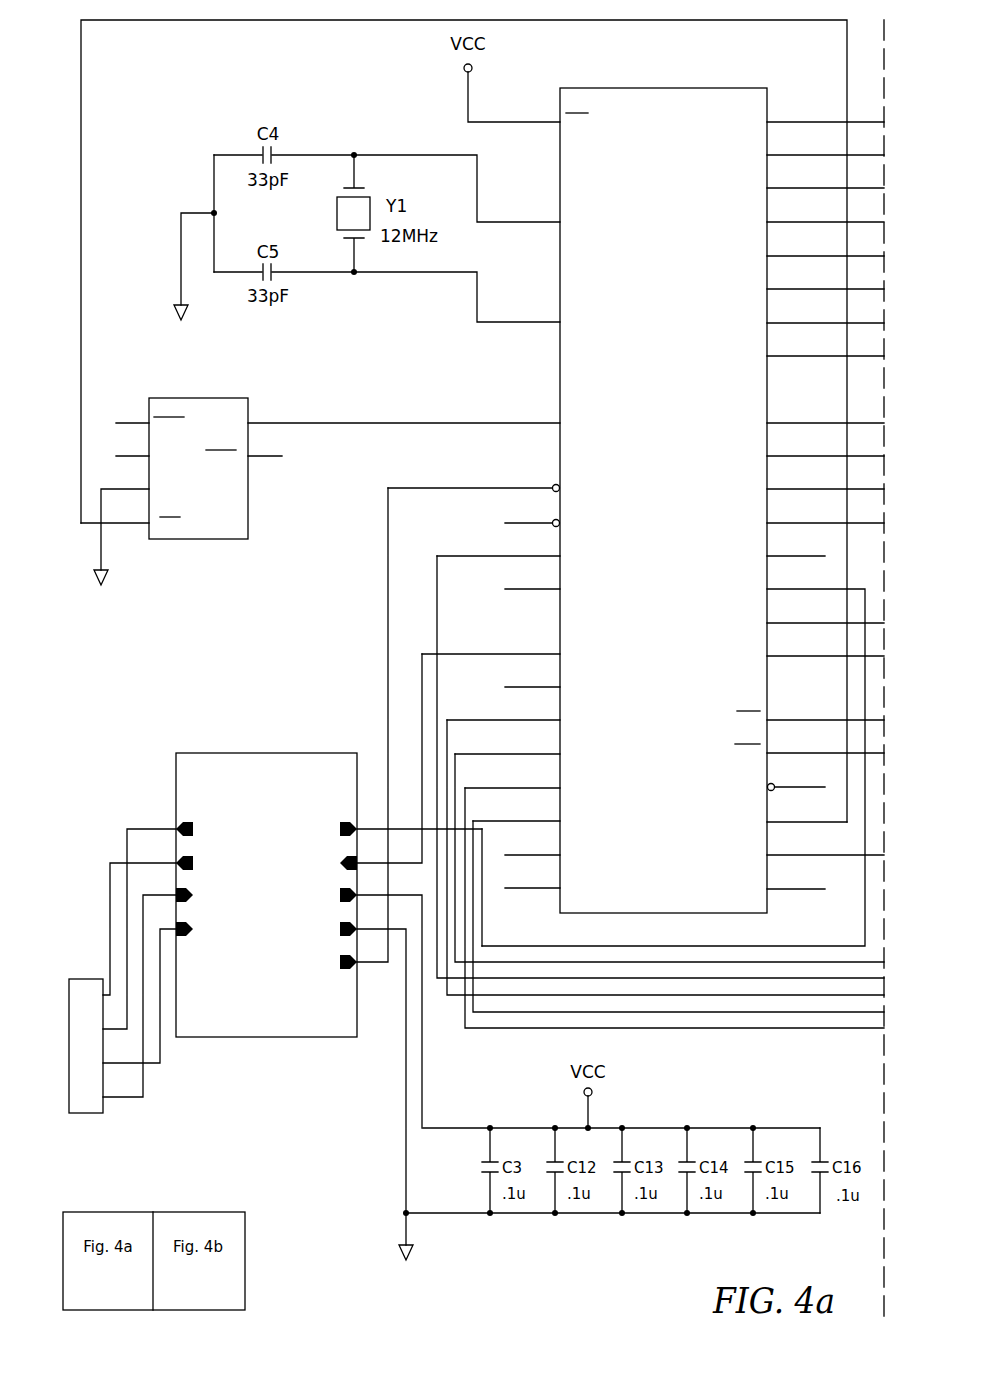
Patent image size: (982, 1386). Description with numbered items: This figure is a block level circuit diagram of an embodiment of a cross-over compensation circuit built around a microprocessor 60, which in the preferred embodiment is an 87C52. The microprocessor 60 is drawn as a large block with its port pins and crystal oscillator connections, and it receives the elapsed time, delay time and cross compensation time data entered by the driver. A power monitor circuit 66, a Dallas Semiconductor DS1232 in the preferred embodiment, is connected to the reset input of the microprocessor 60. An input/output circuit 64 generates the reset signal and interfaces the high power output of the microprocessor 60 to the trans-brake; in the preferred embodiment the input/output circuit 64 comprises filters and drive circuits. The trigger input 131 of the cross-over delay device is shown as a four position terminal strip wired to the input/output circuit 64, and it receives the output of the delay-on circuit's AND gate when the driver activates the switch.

The microprocessor 60 is at (688, 88).
The power monitor circuit 66 is at (250, 523).
The input/output circuit 64 is at (176, 778).
The trigger input 131 is at (69, 1043).